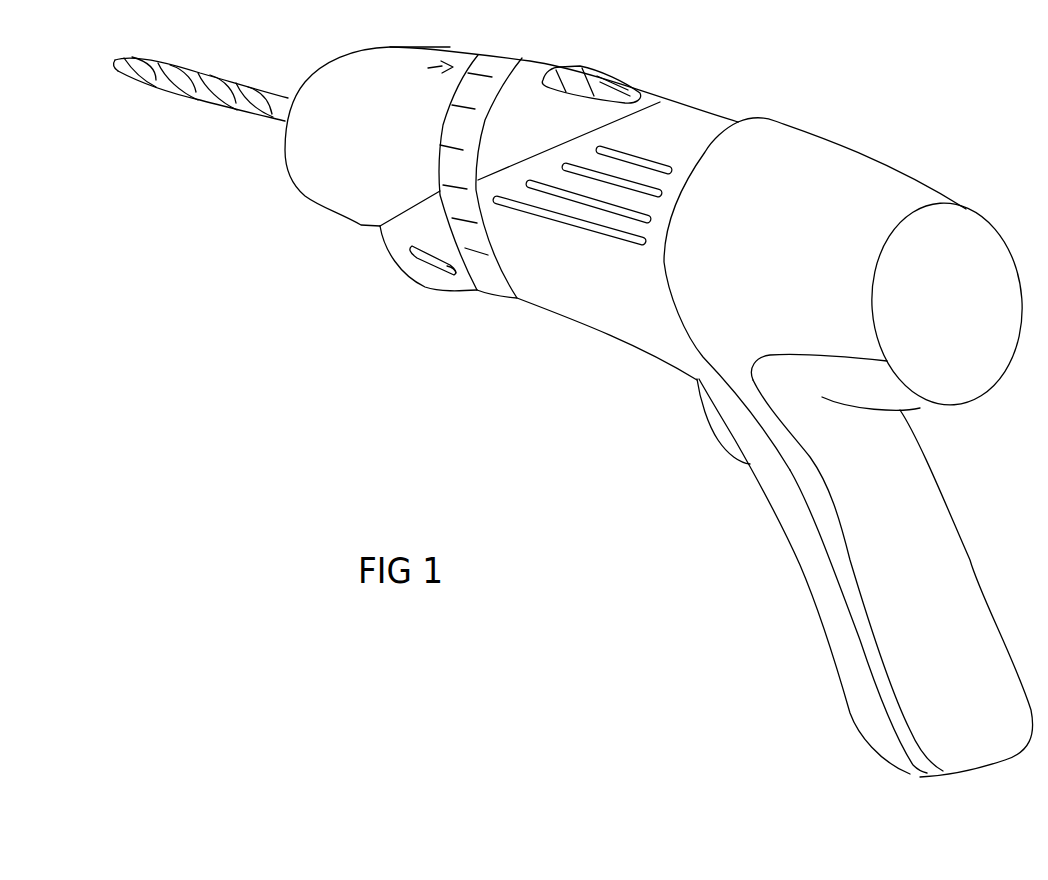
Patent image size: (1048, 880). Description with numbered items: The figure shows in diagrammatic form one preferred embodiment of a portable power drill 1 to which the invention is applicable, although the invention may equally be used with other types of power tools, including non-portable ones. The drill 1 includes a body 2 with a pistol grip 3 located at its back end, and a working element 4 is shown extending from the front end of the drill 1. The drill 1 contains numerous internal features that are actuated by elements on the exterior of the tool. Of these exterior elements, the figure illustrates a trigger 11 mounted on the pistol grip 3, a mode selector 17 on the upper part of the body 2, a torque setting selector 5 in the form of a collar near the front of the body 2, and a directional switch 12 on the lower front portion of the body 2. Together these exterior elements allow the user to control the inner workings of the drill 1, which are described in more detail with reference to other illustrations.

The portable power drill 1 is at (716, 98).
The body 2 is at (561, 308).
The pistol grip 3 is at (833, 605).
The working element 4 is at (201, 94).
The torque setting selector 5 is at (492, 64).
The trigger 11 is at (723, 427).
The directional switch 12 is at (433, 267).
The mode selector 17 is at (610, 92).